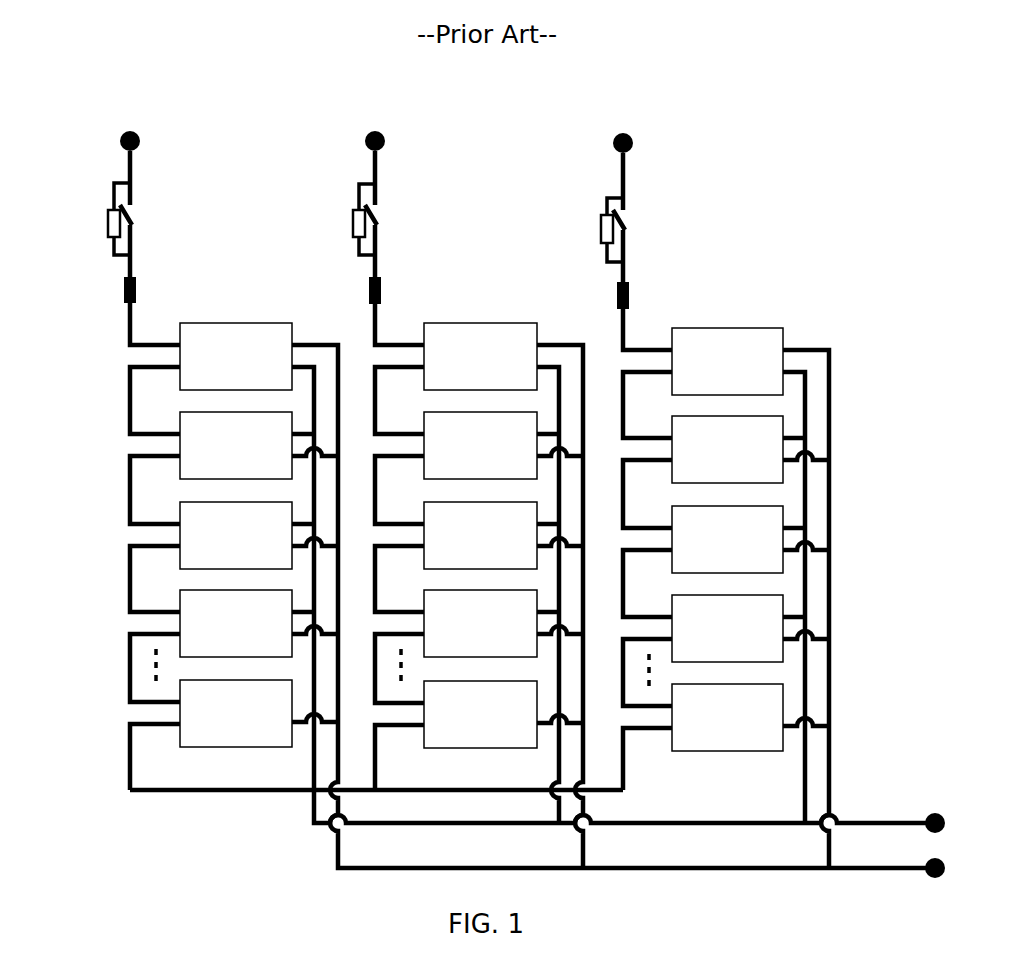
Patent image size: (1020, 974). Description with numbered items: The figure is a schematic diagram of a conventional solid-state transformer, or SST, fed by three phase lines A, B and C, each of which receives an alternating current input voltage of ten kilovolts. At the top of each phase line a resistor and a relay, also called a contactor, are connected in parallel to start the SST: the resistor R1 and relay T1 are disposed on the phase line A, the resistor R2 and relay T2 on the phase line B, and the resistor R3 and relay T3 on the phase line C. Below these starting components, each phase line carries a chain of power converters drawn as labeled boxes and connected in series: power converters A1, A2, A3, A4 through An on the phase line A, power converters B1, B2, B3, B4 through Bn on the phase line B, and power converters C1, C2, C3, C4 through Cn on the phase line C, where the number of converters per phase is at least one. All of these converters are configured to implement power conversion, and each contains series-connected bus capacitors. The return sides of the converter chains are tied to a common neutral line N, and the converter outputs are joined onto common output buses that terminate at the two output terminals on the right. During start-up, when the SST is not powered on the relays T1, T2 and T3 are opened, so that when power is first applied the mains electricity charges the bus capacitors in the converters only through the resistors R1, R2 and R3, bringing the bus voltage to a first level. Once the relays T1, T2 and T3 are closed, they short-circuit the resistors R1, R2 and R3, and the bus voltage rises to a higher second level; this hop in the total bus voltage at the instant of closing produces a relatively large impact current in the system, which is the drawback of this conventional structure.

The phase line A is at (130, 125).
The phase line B is at (375, 125).
The phase line C is at (623, 127).
The resistor R1 is at (91, 219).
The resistor R2 is at (335, 219).
The resistor R3 is at (582, 230).
The relay T1 is at (151, 214).
The relay T2 is at (399, 214).
The relay T3 is at (647, 217).
The neutral line N is at (350, 785).
The power converter A1 is at (236, 356).
The power converter A2 is at (236, 445).
The phase A power unit 3 A3 is at (236, 535).
The phase A power unit 4 A4 is at (236, 623).
The power converter An is at (236, 713).
The power converter B1 is at (480, 356).
The power converter B2 is at (480, 445).
The phase B power unit 3 B3 is at (480, 535).
The phase B power unit 4 B4 is at (480, 623).
The power converter Bn is at (480, 714).
The power converter C1 is at (727, 361).
The power converter C2 is at (727, 449).
The phase C power unit 3 C3 is at (727, 539).
The phase C power unit 4 C4 is at (727, 628).
The power converter Cn is at (727, 717).